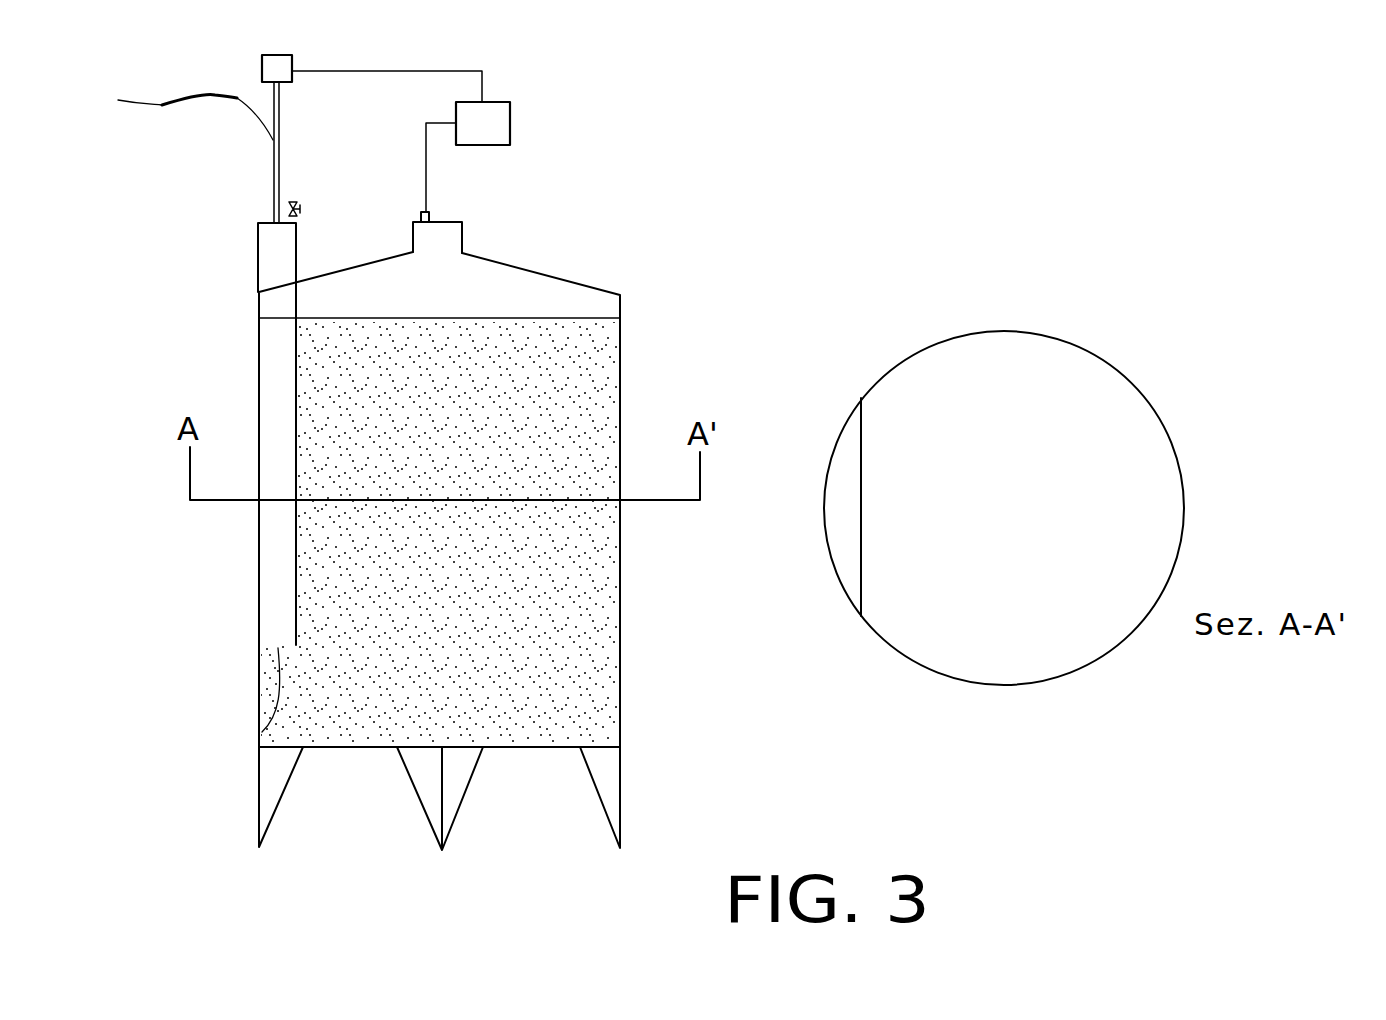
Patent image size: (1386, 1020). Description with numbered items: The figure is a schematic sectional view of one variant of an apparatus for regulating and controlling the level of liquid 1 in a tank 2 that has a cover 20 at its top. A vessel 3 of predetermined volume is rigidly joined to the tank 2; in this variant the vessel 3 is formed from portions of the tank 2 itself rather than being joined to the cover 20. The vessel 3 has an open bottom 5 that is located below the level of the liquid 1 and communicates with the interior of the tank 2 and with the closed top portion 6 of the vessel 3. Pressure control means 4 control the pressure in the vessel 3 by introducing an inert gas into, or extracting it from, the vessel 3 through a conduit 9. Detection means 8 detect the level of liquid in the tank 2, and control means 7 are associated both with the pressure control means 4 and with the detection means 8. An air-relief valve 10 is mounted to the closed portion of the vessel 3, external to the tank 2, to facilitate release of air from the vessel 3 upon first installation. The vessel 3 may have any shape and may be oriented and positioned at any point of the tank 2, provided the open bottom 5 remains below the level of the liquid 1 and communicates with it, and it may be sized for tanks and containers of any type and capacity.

The liquid 1 is at (447, 436).
The tank 2 is at (620, 407).
The vessel 3 is at (255, 260).
The pressure control means 4 is at (277, 53).
The open bottom 5 is at (262, 732).
The closed top portion 6 is at (260, 218).
The control means 7 is at (512, 127).
The detection means 8 is at (423, 212).
The conduit 9 is at (183, 110).
The air-relief valve 10 is at (309, 211).
The cover 20 is at (443, 222).